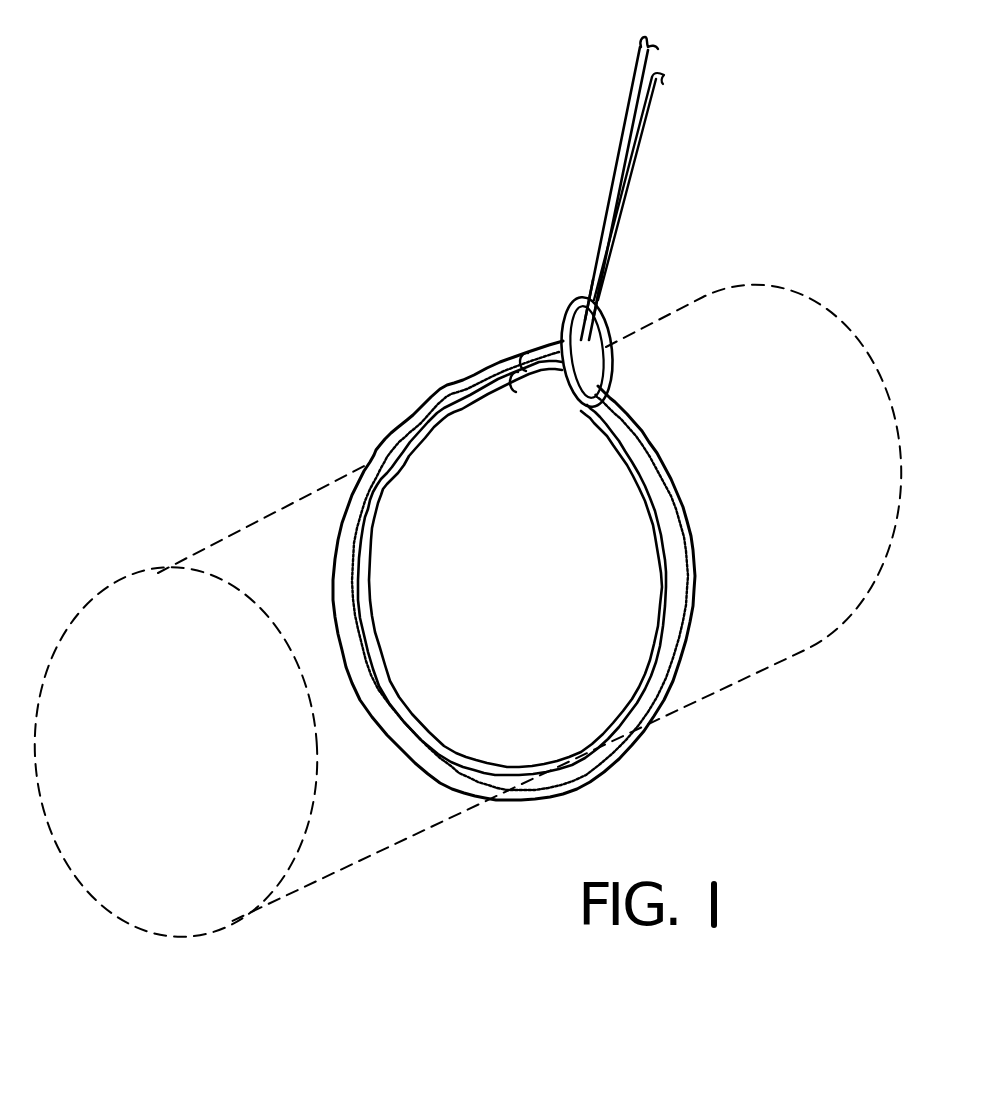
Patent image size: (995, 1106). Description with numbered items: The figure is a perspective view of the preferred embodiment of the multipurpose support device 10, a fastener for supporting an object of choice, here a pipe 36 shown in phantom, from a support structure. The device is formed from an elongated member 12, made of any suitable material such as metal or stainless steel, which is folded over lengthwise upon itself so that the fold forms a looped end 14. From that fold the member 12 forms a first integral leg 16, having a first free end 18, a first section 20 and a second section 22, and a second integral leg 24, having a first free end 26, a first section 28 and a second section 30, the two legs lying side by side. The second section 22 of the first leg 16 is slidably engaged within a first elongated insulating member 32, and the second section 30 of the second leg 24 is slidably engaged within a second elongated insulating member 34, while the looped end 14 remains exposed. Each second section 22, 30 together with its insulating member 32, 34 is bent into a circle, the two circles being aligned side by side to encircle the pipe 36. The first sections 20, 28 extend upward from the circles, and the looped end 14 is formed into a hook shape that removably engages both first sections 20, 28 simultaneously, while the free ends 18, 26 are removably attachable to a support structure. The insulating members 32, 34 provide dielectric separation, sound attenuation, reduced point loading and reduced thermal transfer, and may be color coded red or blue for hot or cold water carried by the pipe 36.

The multipurpose support device 10 is at (324, 319).
The elongated member 12 is at (602, 215).
The looped end 14 is at (613, 365).
The first integral leg 16 is at (620, 132).
The first free end of first leg 18 is at (640, 44).
The first section of first leg 20 is at (585, 290).
The second section of first leg 22 is at (528, 350).
The second integral leg 24 is at (638, 165).
The first free end of second leg 26 is at (662, 87).
The first section of second leg 28 is at (604, 290).
The second section of second leg 30 is at (520, 386).
The first elongated insulating member 32 is at (675, 480).
The second elongated insulating member 34 is at (655, 630).
The pipe 36 is at (408, 836).